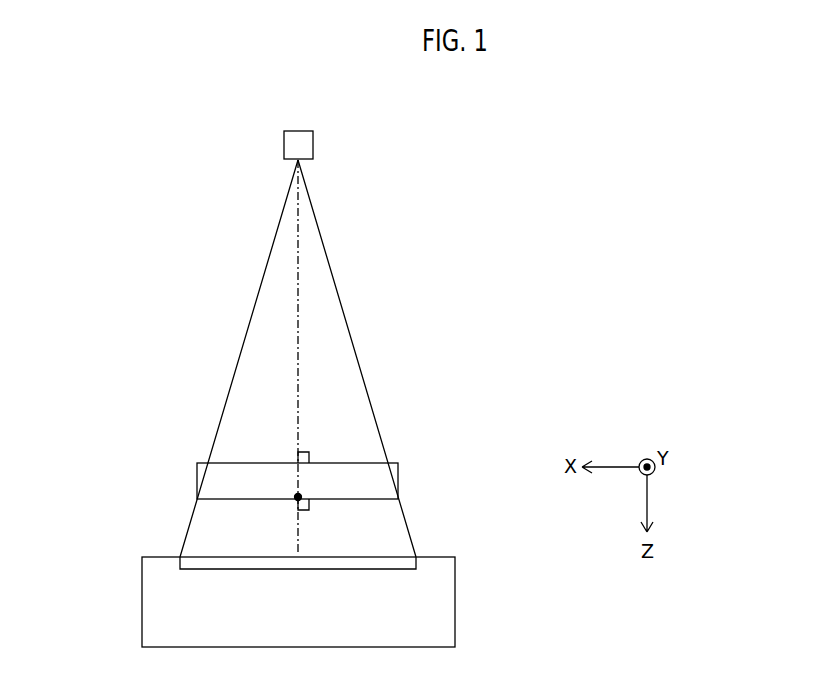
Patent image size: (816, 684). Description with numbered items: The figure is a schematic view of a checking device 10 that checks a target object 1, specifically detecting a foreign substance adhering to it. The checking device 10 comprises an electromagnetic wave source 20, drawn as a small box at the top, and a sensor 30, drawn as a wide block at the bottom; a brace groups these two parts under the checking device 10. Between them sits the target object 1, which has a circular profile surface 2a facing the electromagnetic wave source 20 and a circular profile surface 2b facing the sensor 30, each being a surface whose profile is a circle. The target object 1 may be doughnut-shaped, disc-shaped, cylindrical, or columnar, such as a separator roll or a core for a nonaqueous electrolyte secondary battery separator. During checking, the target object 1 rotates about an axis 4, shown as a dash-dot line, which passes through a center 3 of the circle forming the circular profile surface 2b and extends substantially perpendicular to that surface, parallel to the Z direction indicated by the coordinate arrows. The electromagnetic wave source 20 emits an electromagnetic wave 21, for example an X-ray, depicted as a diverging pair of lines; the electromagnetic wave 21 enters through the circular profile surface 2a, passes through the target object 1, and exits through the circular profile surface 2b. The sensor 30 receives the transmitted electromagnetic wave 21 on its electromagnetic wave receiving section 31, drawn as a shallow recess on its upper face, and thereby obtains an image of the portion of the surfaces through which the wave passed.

The target object 1 is at (413, 447).
The circular profile surface 2a is at (313, 463).
The circular profile surface 2b is at (310, 499).
The center 3 is at (295, 500).
The axis 4 is at (302, 367).
The checking device 10 is at (87, 247).
The electromagnetic wave source 20 is at (283, 145).
The electromagnetic wave 21 is at (358, 370).
The sensor 30 is at (165, 557).
The electromagnetic wave receiving section 31 is at (393, 563).